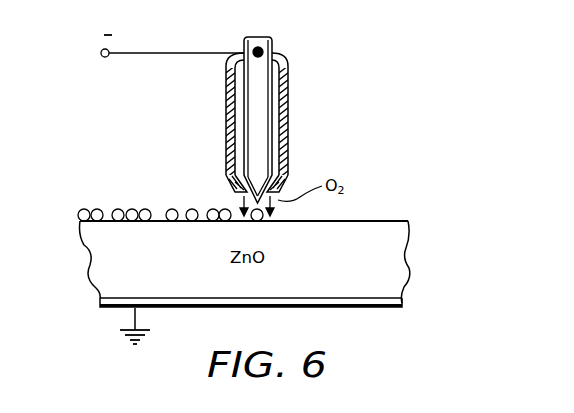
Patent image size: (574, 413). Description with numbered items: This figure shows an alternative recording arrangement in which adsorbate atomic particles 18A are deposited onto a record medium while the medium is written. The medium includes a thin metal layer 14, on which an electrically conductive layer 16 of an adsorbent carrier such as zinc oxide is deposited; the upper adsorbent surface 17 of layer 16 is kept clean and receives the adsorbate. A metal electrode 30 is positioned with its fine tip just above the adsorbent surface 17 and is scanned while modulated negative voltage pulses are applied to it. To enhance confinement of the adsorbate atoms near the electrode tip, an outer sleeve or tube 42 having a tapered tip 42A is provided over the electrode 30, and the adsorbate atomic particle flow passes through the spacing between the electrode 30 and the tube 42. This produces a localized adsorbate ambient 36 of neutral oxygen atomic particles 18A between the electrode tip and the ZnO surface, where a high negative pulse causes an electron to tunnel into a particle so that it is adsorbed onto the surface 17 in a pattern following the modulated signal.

The electrode 30 is at (253, 77).
The outer sleeve or tube 42 is at (227, 114).
The tapered tip 42A is at (230, 180).
The localized adsorbate atomic ambient 36 is at (232, 202).
The adsorbate atomic particles 18A is at (92, 208).
The adsorbent surface 17 is at (377, 220).
The electrically conductive layer of adsorbent carrier 16 is at (93, 253).
The thin metal layer 14 is at (100, 302).